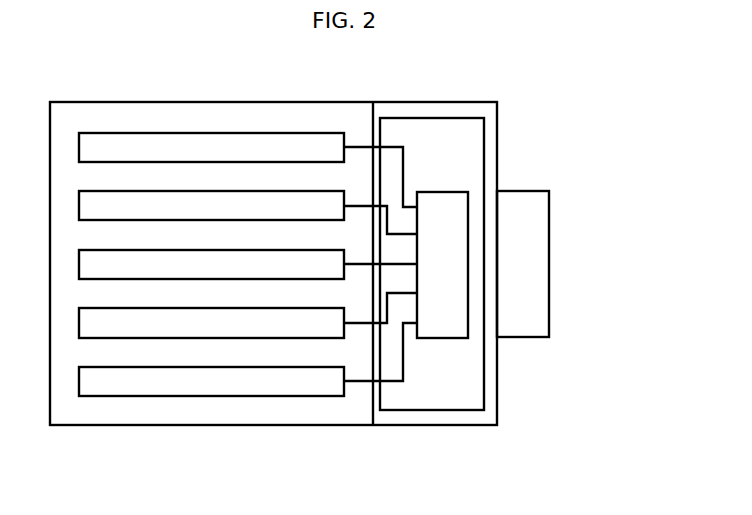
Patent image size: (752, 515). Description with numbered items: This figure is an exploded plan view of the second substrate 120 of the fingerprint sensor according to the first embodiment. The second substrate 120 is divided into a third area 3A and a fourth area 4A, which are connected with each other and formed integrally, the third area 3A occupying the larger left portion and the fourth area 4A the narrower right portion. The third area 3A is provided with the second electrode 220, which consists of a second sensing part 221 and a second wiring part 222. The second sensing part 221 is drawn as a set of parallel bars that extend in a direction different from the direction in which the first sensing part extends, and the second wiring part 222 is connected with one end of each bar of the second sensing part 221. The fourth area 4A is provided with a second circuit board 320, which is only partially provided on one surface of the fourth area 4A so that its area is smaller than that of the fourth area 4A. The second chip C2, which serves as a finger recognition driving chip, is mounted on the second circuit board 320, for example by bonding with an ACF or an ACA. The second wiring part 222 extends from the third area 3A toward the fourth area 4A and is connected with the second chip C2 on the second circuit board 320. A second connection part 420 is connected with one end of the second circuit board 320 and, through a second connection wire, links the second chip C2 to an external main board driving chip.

The second substrate 120 is at (179, 426).
The third area 3A is at (275, 415).
The fourth area 4A is at (477, 417).
The second circuit board 320 is at (412, 412).
The second electrode 220 is at (356, 247).
The second sensing part 221 is at (325, 132).
The second wiring part 222 is at (405, 173).
The second chip C2 is at (445, 342).
The second connection part 420 is at (549, 262).